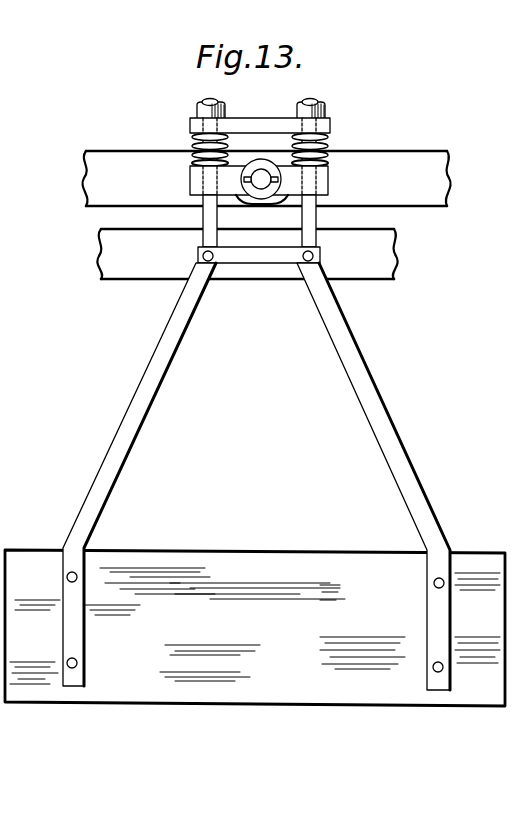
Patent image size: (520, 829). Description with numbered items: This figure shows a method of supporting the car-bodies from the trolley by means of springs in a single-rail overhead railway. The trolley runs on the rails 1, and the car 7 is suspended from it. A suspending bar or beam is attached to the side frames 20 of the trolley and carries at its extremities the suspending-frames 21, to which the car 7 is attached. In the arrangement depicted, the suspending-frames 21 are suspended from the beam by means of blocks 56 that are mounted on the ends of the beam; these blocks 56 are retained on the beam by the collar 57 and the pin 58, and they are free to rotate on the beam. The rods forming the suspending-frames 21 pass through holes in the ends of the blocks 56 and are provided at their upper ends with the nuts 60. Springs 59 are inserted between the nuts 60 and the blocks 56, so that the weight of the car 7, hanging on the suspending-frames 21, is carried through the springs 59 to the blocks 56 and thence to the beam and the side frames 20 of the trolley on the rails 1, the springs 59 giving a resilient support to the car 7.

The rails 1 is at (247, 254).
The car 7 is at (255, 628).
The side frames of the trolley 20 is at (266, 178).
The suspending-frames 21 is at (310, 223).
The blocks 56 is at (295, 181).
The collar 57 is at (258, 196).
The pin 58 is at (244, 179).
The springs 59 is at (297, 162).
The nuts 60 is at (300, 112).